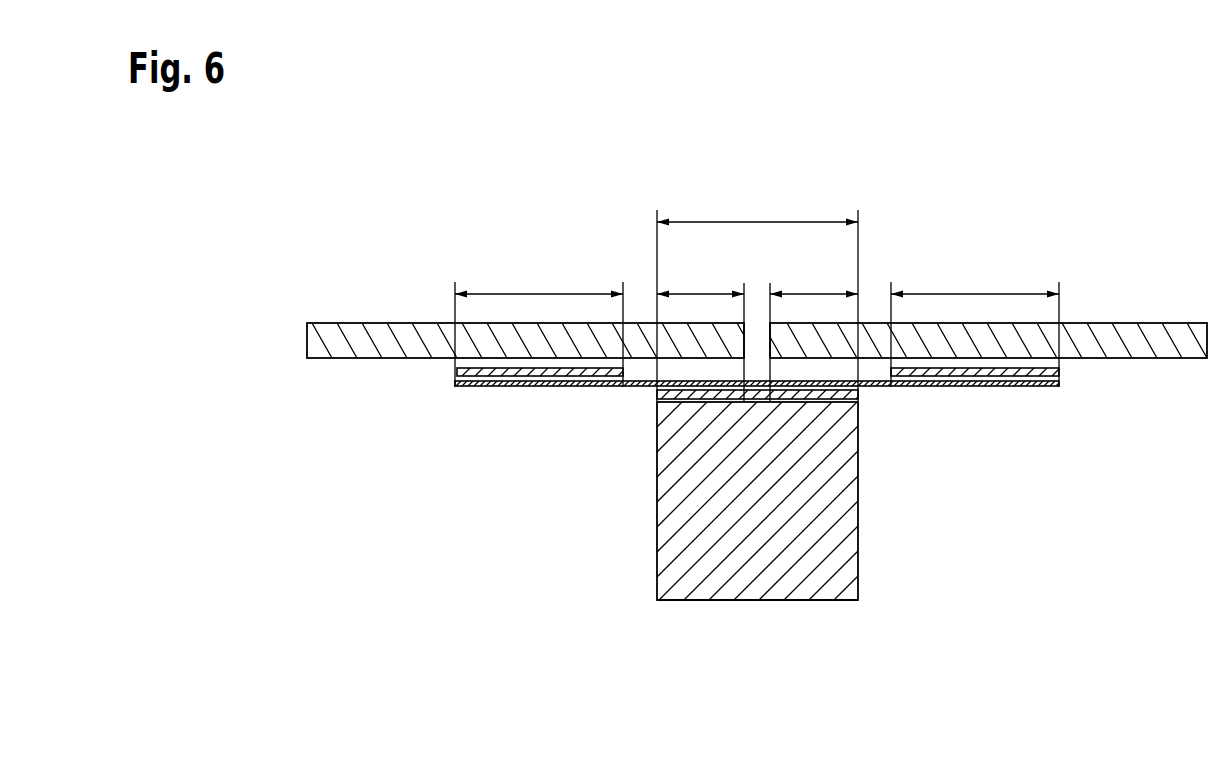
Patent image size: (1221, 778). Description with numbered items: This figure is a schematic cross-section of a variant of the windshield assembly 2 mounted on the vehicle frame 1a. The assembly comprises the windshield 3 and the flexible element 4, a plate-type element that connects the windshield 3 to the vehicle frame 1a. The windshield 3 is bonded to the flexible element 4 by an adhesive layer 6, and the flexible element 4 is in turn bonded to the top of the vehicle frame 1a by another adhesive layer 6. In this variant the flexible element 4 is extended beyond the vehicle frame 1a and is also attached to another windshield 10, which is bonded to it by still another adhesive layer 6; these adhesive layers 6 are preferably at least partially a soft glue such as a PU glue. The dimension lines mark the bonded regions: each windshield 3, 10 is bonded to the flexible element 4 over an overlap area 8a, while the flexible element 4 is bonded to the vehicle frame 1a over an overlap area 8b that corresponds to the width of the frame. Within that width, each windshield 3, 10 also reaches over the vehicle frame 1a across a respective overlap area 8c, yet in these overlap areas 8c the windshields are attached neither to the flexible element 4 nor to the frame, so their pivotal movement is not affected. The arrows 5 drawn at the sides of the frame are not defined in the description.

The vehicle frame 1a is at (757, 601).
The windshield assembly 2 is at (421, 201).
The windshield 3 is at (365, 318).
The flexible element 4 is at (545, 400).
The component body 5 is at (645, 509).
The adhesive layer 6 is at (457, 371).
The overlap area 8a is at (546, 294).
The overlap area 8b is at (757, 222).
The overlap area 8c is at (700, 294).
The other windshield 10 is at (1149, 318).